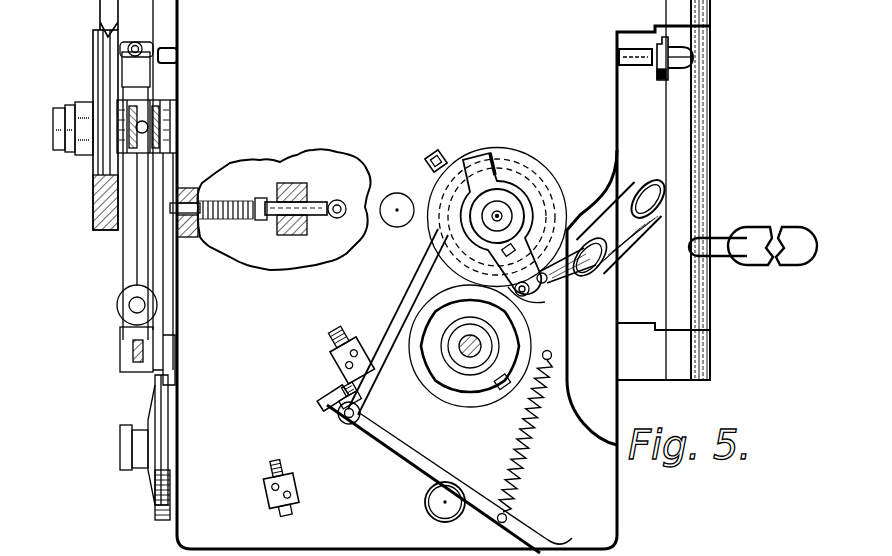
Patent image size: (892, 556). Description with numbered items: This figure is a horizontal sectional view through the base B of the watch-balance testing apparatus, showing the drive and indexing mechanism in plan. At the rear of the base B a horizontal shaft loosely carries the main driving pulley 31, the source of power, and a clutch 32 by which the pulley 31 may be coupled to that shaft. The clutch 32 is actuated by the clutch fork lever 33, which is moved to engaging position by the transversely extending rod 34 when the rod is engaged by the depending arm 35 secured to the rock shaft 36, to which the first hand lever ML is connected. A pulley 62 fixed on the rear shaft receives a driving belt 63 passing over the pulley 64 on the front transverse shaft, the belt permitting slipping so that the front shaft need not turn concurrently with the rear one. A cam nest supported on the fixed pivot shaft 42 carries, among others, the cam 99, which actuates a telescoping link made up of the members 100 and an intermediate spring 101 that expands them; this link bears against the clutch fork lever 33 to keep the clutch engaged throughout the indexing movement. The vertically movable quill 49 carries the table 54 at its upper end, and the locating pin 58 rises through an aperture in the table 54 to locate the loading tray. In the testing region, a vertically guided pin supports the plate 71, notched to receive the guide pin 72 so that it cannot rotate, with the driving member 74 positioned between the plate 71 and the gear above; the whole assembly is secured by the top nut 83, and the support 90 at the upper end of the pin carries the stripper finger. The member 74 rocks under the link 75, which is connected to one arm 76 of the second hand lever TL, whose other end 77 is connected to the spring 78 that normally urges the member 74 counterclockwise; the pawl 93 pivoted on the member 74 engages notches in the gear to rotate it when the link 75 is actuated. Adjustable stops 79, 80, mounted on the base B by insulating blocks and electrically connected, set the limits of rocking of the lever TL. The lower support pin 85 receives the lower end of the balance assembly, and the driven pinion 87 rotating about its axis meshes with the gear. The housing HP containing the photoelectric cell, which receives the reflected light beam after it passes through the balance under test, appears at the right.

The main driving pulley 31 is at (93, 70).
The clutch 32 is at (123, 150).
The lever 33 is at (133, 240).
The rod 34 is at (628, 50).
The depending arm 35 is at (668, 77).
The rock shaft 36 is at (697, 118).
The fixed pivot shaft 42 is at (397, 203).
The quill 49 is at (464, 352).
The table 54 is at (418, 340).
The locating pin 58 is at (468, 380).
The pulley 62 is at (155, 120).
The driving belt 63 is at (157, 385).
The pulley 64 is at (157, 500).
The plate 71 is at (448, 160).
The guide pin 72 is at (430, 162).
The driving member 74 is at (540, 167).
The link 75 is at (418, 290).
The arm 76 is at (380, 445).
The other end 77 is at (473, 503).
The spring 78 is at (522, 427).
The adjustable stop 79 is at (335, 372).
The adjustable stop 80 is at (270, 463).
The top nut 83 is at (500, 197).
The lower support pin 85 is at (514, 300).
The driven pinion 87 is at (537, 288).
The support 90 is at (489, 150).
The pawl 93 is at (551, 181).
The cam 99 is at (352, 223).
The members 100 is at (293, 205).
The intermediate spring 101 is at (205, 197).
The base B is at (185, 530).
The housing HP is at (632, 244).
The first hand lever ML is at (790, 233).
The second hand lever TL is at (566, 541).